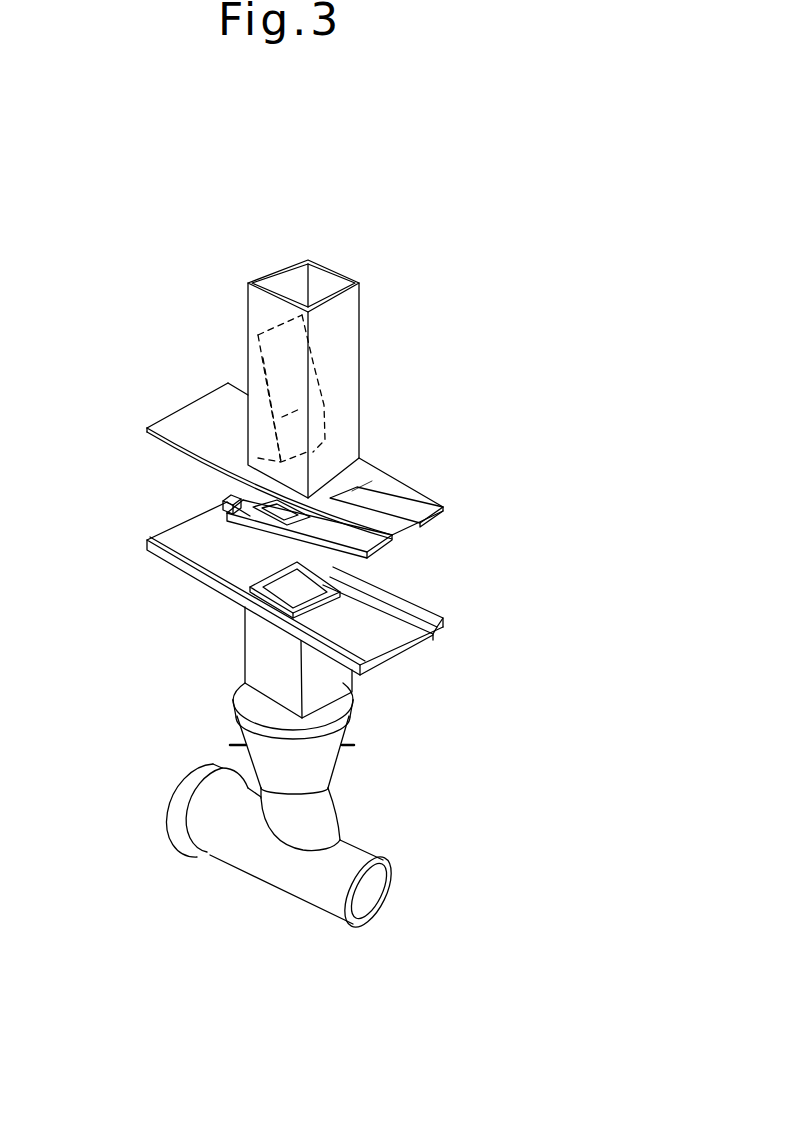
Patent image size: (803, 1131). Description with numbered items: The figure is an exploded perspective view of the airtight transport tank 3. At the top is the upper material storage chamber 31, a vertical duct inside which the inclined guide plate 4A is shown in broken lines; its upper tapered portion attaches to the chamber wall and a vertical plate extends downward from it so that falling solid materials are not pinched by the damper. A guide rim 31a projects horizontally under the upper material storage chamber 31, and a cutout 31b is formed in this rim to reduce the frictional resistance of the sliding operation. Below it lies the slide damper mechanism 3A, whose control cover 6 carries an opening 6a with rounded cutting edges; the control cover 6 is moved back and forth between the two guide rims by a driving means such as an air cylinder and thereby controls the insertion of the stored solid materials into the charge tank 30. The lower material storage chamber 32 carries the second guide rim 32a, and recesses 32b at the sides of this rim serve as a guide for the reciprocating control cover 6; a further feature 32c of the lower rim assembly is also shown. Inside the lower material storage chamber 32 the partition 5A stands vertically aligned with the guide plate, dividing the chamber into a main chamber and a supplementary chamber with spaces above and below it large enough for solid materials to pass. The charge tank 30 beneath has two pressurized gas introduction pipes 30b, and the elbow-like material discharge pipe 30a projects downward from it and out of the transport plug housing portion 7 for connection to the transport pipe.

The airtight transport tank 3 is at (185, 296).
The slide damper mechanism 3A is at (105, 489).
The inclined guide plate 4A is at (277, 348).
The upper material storage chamber 31 is at (352, 358).
The guide rim 31a is at (420, 500).
The cutout 31b is at (373, 505).
The lower material storage chamber 32 is at (255, 637).
The guide rim 32a is at (393, 643).
The recesses 32b is at (408, 618).
The guide bar 32c is at (355, 557).
The partition 5A is at (298, 592).
The control cover 6 is at (218, 512).
The opening 6a is at (230, 505).
The charge tank 30 is at (322, 755).
The material discharge pipe 30a is at (322, 817).
The pressurized gas introduction pipes 30b is at (237, 742).
The transport plug housing portion 7 is at (278, 870).